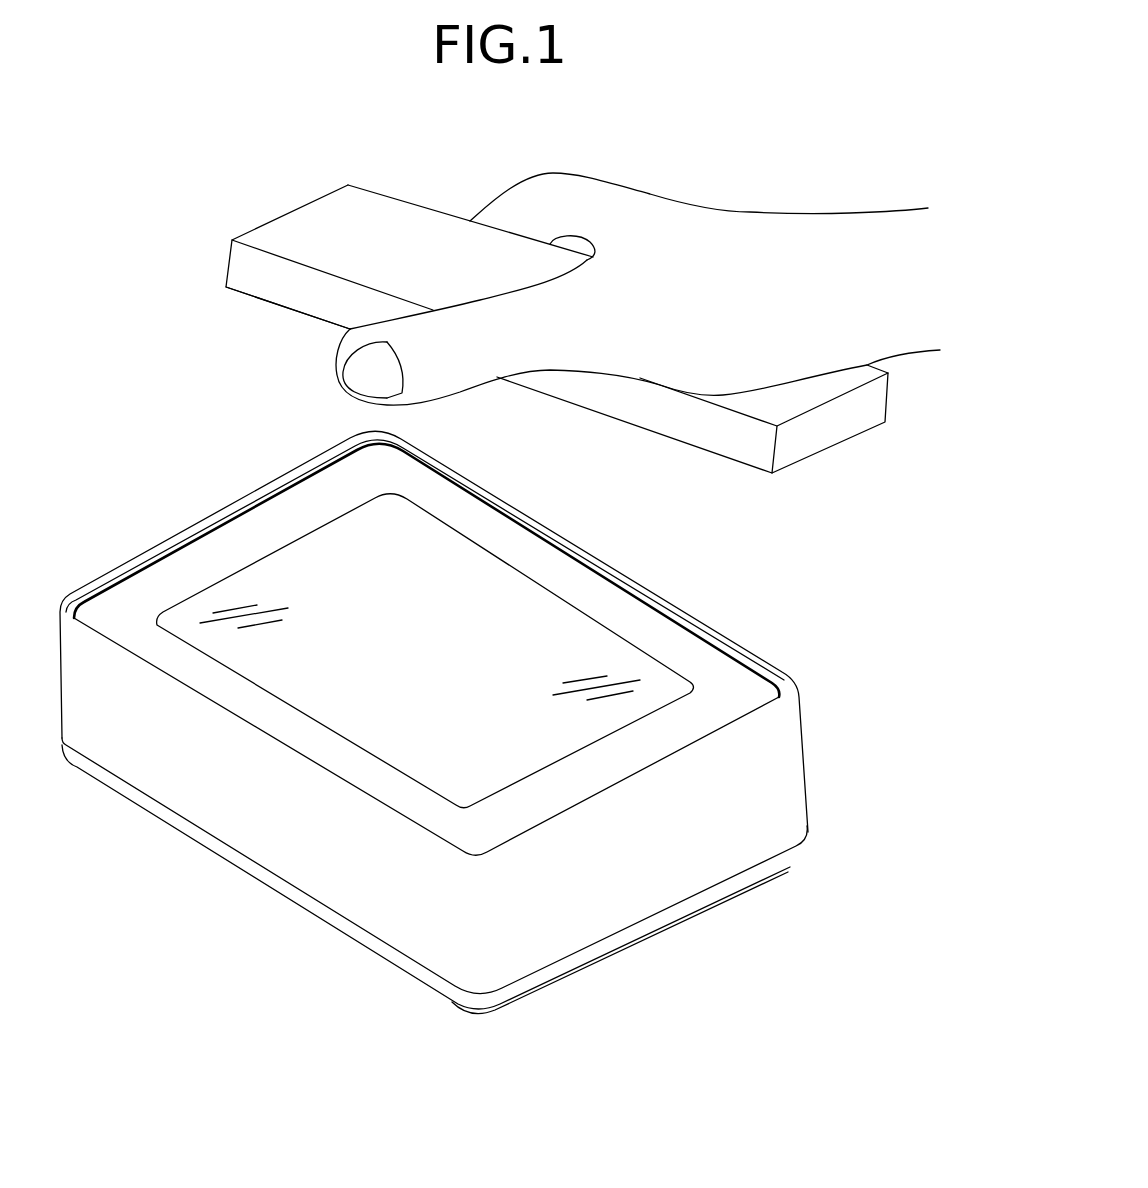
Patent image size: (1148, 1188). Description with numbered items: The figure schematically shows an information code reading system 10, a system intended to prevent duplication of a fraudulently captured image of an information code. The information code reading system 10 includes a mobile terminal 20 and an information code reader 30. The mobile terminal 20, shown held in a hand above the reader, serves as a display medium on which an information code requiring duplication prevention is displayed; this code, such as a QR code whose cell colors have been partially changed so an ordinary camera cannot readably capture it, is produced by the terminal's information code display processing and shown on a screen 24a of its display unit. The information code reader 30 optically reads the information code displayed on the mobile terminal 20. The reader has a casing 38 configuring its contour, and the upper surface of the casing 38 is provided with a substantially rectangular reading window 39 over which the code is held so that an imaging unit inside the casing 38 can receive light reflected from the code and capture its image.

The information code reading system 10 is at (157, 192).
The mobile terminal 20 is at (385, 170).
The screen 24a is at (325, 327).
The information code reader 30 is at (168, 474).
The casing 38 is at (272, 833).
The reading window 39 is at (334, 565).